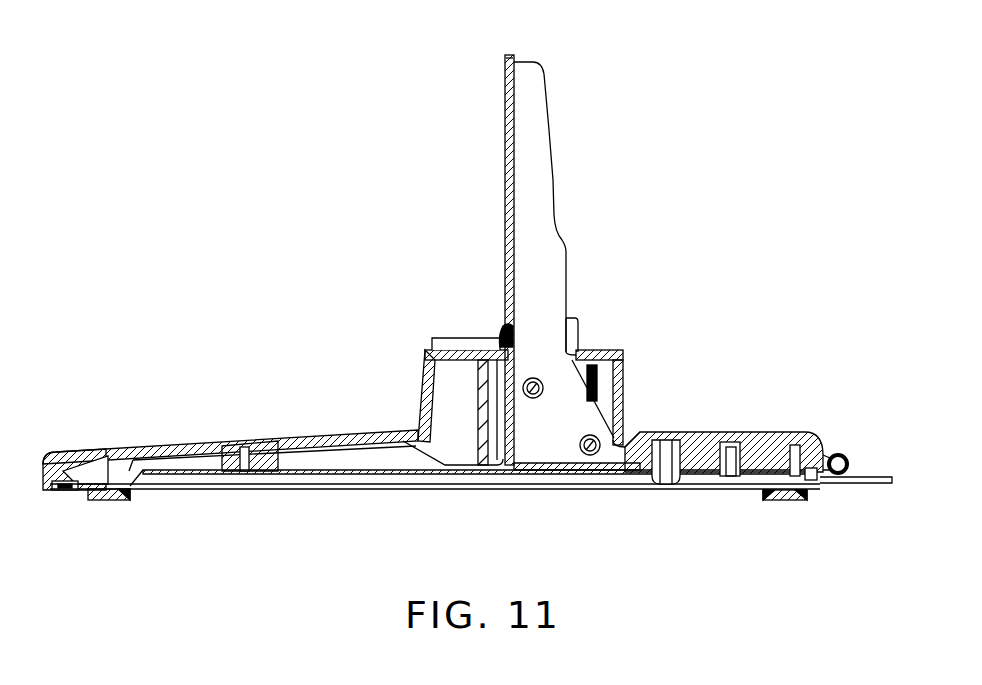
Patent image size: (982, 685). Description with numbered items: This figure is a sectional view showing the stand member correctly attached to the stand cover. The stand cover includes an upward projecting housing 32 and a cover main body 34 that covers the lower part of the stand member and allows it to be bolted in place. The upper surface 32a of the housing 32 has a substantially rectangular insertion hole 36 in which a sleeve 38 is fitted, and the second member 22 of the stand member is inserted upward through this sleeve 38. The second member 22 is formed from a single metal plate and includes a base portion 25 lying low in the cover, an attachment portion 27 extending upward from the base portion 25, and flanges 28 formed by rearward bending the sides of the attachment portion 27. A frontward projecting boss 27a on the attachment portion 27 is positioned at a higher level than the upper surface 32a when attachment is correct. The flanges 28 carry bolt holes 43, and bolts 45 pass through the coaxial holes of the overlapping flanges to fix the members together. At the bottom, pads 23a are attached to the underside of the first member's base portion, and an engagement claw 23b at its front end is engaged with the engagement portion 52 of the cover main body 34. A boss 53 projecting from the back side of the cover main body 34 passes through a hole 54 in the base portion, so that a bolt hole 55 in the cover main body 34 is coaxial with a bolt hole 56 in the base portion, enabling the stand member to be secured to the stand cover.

The second member 22 is at (547, 63).
The pad 23a is at (115, 503).
The engagement claw 23b is at (87, 460).
The base portion 25 is at (550, 476).
The attachment portion 27 is at (515, 183).
The boss 27a is at (500, 337).
The flange 28 is at (540, 130).
The housing 32 is at (425, 360).
The upper surface 32a is at (605, 350).
The cover main body 34 is at (203, 436).
The insertion hole 36 is at (573, 333).
The sleeve 38 is at (580, 340).
The bolt hole 43 is at (540, 395).
The bolt 45 is at (533, 378).
The engagement portion 52 is at (63, 493).
The boss 53 is at (653, 488).
The hole 54 is at (652, 470).
The bolt hole 55 is at (727, 478).
The bolt hole 56 is at (736, 478).